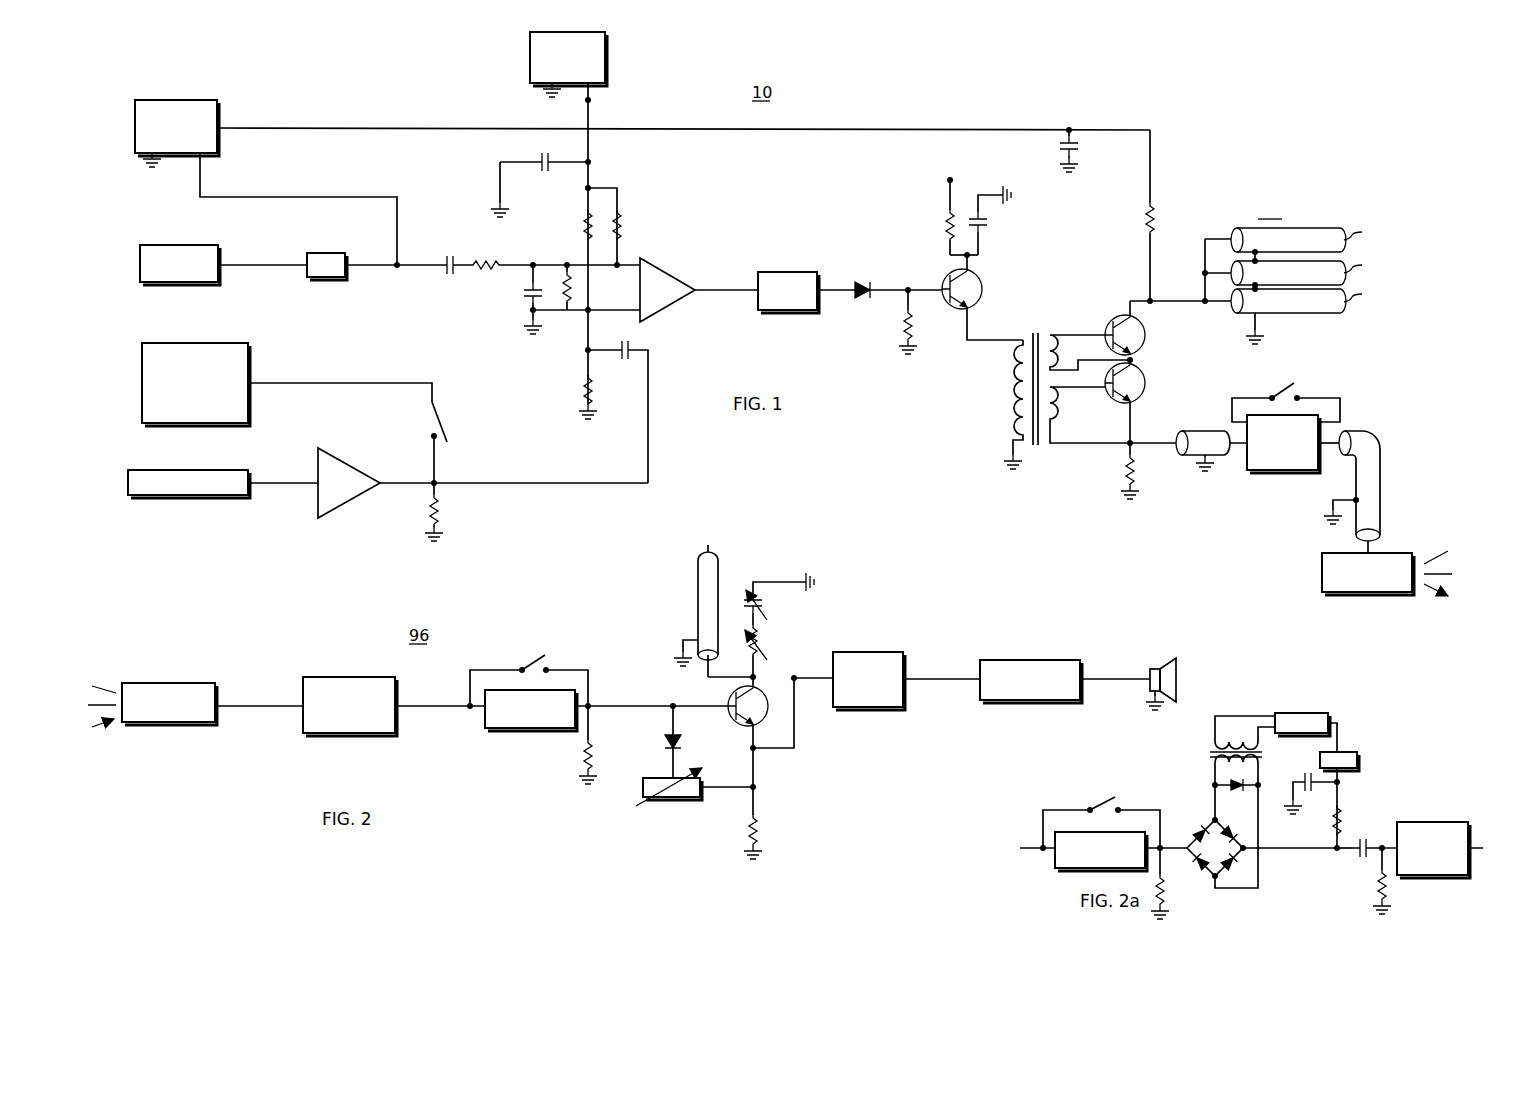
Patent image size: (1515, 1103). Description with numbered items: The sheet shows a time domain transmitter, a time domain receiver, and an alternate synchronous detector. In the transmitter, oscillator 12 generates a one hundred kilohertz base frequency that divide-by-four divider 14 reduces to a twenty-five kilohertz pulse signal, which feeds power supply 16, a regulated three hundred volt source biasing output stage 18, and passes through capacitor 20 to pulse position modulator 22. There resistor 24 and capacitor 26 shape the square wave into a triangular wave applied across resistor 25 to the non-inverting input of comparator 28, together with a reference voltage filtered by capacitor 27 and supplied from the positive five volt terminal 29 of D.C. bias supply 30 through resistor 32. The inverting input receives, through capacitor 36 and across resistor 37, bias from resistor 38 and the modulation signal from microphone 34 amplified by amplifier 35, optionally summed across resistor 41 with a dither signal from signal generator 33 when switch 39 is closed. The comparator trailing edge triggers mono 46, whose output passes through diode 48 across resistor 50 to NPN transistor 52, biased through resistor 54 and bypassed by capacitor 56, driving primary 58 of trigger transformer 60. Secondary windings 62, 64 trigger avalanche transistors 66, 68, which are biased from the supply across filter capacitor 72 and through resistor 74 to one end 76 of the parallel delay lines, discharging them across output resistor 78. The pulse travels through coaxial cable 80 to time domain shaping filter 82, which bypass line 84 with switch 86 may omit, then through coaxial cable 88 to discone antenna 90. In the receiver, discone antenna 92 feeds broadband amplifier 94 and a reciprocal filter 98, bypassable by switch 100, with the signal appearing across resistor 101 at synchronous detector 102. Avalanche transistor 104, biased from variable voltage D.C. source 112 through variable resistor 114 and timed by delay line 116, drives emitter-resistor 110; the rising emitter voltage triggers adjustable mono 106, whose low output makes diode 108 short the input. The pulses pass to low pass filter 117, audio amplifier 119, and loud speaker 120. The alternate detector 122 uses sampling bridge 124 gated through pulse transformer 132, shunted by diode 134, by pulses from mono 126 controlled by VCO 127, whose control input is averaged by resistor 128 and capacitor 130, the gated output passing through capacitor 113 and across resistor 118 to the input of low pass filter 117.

In FIG. 1, the oscillator 12 is at (178, 245).
In FIG. 1, the divide-by-4 divider 14 is at (323, 253).
In FIG. 1, the power supply 16 is at (206, 101).
In FIG. 1, the output stage 18 is at (1049, 383).
In FIG. 1, the capacitor 20 is at (451, 262).
In FIG. 1, the pulse position modulator 22 is at (664, 221).
In FIG. 1, the resistor 24 is at (491, 273).
In FIG. 1, the resistor 25 is at (574, 310).
In FIG. 1, the capacitor 26 is at (521, 302).
In FIG. 1, the capacitor 27 is at (540, 158).
In FIG. 1, the comparator 28 is at (674, 274).
In FIG. 1, the +5 volt terminal 29 is at (591, 100).
In FIG. 1, the D.C. bias supply 30 is at (608, 72).
In FIG. 1, the resistor 32 is at (632, 231).
In FIG. 1, the signal generator 33 is at (255, 369).
In FIG. 1, the microphone 34 is at (220, 472).
In FIG. 1, the amplifier 35 is at (352, 470).
In FIG. 1, the capacitor 36 is at (630, 360).
In FIG. 1, the resistor 37 is at (584, 387).
In FIG. 1, the resistor 38 is at (584, 225).
In FIG. 1, the switch 39 is at (446, 422).
In FIG. 1, the resistor 41 is at (439, 514).
In FIG. 1, the mono 46 is at (785, 272).
In FIG. 1, the diode 48 is at (863, 283).
In FIG. 1, the resistor 50 is at (904, 326).
In FIG. 1, the NPN transistor 52 is at (982, 290).
In FIG. 1, the resistor 54 is at (948, 225).
In FIG. 1, the capacitor 56 is at (988, 224).
In FIG. 1, the primary 58 is at (1018, 388).
In FIG. 1, the trigger transformer 60 is at (1019, 322).
In FIG. 1, the secondary winding 62 is at (1052, 350).
In FIG. 1, the secondary winding 64 is at (1049, 402).
In FIG. 1, the avalanche transistor 66 is at (1120, 319).
In FIG. 1, the avalanche transistor 68 is at (1120, 412).
In FIG. 1, the filter capacitor 72 is at (1076, 151).
In FIG. 1, the resistor 74 is at (1148, 219).
In FIG. 1, the one end of delay lines 76 is at (1234, 240).
In FIG. 1, the output resistor 78 is at (1128, 469).
In FIG. 1, the coaxial cable 80 is at (1211, 433).
In FIG. 1, the time domain shaping filter 82 is at (1290, 472).
In FIG. 1, the bypass line 84 is at (1342, 416).
In FIG. 1, the switch 86 is at (1285, 391).
In FIG. 1, the coaxial cable 88 is at (1380, 476).
In FIG. 1, the discone antenna 90 is at (1320, 569).
In FIG. 2, the discone antenna 92 is at (176, 682).
In FIG. 2, the broadband amplifier 94 is at (329, 675).
In FIG. 2, the filter 98 is at (528, 731).
In FIG. 2A, the filter 98 is at (1101, 851).
In FIG. 2, the switch 100 is at (522, 665).
In FIG. 2A, the switch 100 is at (1101, 822).
In FIG. 2, the resistor 101 is at (593, 753).
In FIG. 2A, the resistor 101 is at (1170, 905).
In FIG. 2, the synchronous detector 102 is at (682, 611).
In FIG. 2, the avalanche transistor 104 is at (736, 703).
In FIG. 2, the adjustable mono 106 is at (695, 800).
In FIG. 2, the diode 108 is at (679, 745).
In FIG. 2, the emitter-resistor 110 is at (760, 825).
In FIG. 2, the variable voltage D.C. source 112 is at (772, 611).
In FIG. 2A, the capacitor 113 is at (1356, 862).
In FIG. 2, the variable resistor 114 is at (764, 650).
In FIG. 2, the delay line 116 is at (698, 588).
In FIG. 2, the low pass filter 117 is at (859, 652).
In FIG. 2A, the low pass filter 117 is at (1440, 822).
In FIG. 2A, the load resistor 118 is at (1384, 892).
In FIG. 2, the audio amplifier 119 is at (1039, 660).
In FIG. 2, the loud speaker 120 is at (1178, 685).
In FIG. 2A, the detector 122 is at (1178, 789).
In FIG. 2A, the sampling bridge 124 is at (1212, 817).
In FIG. 2A, the mono 126 is at (1282, 712).
In FIG. 2A, the VCO 127 is at (1358, 763).
In FIG. 2A, the resistor 128 is at (1338, 814).
In FIG. 2A, the capacitor 130 is at (1304, 774).
In FIG. 2A, the pulse transformer 132 is at (1210, 753).
In FIG. 2A, the diode 134 is at (1215, 785).